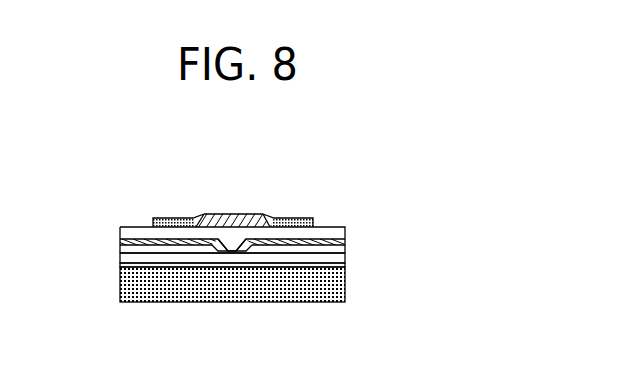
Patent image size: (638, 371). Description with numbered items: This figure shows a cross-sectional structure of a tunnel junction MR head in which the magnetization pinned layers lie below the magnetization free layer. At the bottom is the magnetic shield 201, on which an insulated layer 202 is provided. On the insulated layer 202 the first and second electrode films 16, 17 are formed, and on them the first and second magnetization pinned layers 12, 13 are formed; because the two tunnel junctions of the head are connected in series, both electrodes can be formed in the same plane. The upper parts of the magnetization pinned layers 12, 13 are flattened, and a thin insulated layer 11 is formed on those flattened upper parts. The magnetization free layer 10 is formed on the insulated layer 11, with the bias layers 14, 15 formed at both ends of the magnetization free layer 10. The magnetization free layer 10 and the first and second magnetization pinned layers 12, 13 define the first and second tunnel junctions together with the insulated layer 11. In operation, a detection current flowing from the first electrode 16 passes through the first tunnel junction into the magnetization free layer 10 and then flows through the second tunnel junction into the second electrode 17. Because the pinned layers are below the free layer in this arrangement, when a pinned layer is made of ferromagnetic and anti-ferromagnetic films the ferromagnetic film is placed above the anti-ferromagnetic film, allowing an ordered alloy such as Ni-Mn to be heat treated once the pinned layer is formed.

The magnetization free layer 10 is at (235, 214).
The insulated layer 11 is at (229, 247).
The first magnetization pinned layer 12 is at (320, 240).
The second magnetization pinned layer 13 is at (137, 239).
The bias layer 14 is at (288, 219).
The bias layer 15 is at (162, 222).
The first electrode film 16 is at (337, 250).
The second electrode film 17 is at (130, 248).
The magnetic shield 201 is at (335, 285).
The insulated layer 202 is at (335, 260).